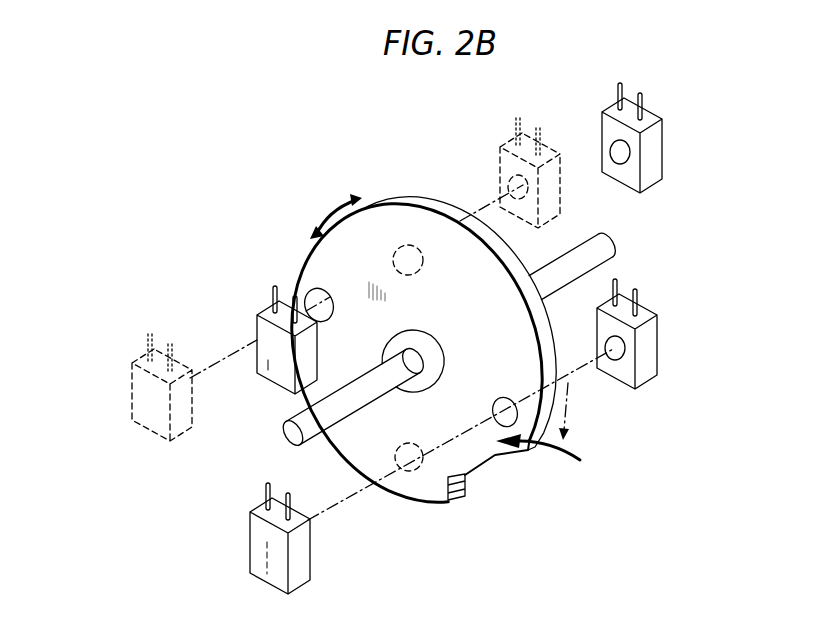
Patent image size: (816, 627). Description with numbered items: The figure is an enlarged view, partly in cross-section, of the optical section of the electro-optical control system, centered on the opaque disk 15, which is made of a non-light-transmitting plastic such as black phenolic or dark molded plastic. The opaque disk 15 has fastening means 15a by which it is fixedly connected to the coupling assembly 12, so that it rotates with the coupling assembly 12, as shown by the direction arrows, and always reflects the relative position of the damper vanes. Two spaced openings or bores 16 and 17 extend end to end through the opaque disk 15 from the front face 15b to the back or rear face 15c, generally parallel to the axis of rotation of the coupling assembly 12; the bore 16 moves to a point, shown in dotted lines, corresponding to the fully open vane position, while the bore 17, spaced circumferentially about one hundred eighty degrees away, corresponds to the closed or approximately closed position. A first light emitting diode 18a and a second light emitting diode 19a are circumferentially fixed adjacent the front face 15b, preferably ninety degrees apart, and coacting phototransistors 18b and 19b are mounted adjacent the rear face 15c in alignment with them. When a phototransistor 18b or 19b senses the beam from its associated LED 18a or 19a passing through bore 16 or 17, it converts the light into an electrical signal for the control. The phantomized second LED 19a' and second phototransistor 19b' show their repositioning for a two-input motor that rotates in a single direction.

The coupling assembly 12 is at (297, 418).
The opaque disk 15 is at (487, 336).
The fastening means 15a is at (437, 338).
The front face 15b is at (418, 497).
The back or rear face 15c is at (467, 485).
The opening or bore 16 is at (310, 288).
The opening or bore 17 is at (505, 397).
The first light emitting diode 18a is at (257, 326).
The first phototransistor 18b is at (662, 153).
The second light emitting diode 19a is at (239, 538).
The second phototransistor 19b is at (664, 334).
The repositioned second light emitting diode 19a' is at (119, 387).
The repositioned second phototransistor 19b' is at (498, 173).